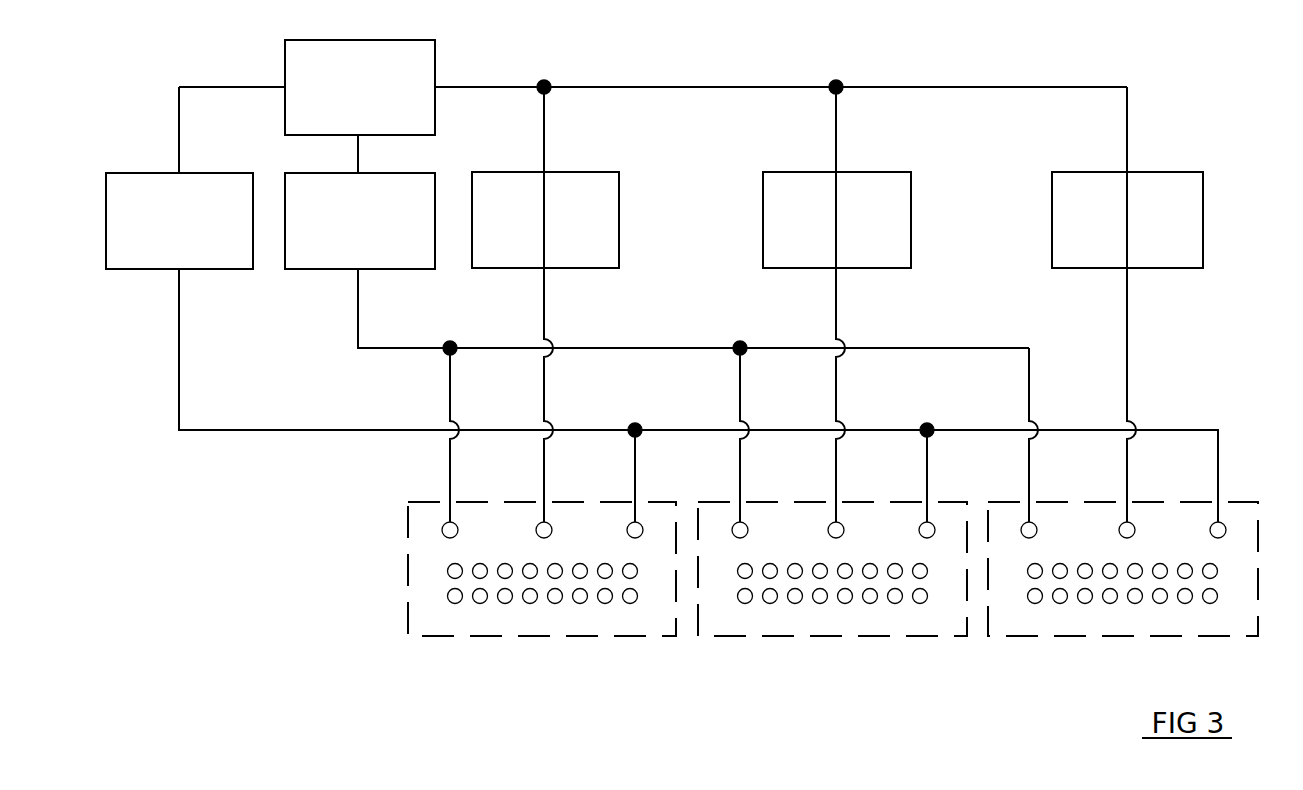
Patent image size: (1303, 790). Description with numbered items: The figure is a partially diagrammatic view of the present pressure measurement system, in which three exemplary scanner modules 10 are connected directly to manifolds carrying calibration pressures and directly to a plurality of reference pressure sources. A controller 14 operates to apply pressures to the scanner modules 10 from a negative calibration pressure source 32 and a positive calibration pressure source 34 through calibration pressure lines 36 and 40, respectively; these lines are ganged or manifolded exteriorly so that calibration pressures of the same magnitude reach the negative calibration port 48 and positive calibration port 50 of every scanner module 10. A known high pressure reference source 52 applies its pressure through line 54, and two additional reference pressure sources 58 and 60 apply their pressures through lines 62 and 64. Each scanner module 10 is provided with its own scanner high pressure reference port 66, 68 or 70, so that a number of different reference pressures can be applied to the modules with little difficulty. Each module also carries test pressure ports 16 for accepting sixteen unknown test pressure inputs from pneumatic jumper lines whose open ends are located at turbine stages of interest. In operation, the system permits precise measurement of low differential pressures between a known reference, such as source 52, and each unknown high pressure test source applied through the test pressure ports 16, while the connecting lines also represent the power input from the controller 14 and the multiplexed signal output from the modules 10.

The scanner module 10 is at (558, 637).
The controller 14 is at (435, 63).
The test pressure ports 16 is at (480, 603).
The calibration pressure source 32 is at (145, 173).
The calibration pressure source 34 is at (285, 203).
The calibration pressure line 36 is at (179, 395).
The calibration pressure line 40 is at (358, 318).
The negative calibration port 48 is at (627, 518).
The positive calibration port 50 is at (440, 518).
The reference pressure source 52 is at (620, 192).
The reference pressure line 54 is at (544, 318).
The reference pressure source 58 is at (915, 185).
The reference pressure source 60 is at (1205, 185).
The reference pressure line 62 is at (836, 310).
The reference pressure line 64 is at (1127, 309).
The scanner high pressure reference port 66 is at (537, 518).
The scanner high pressure reference port 68 is at (828, 518).
The scanner high pressure reference port 70 is at (1120, 518).